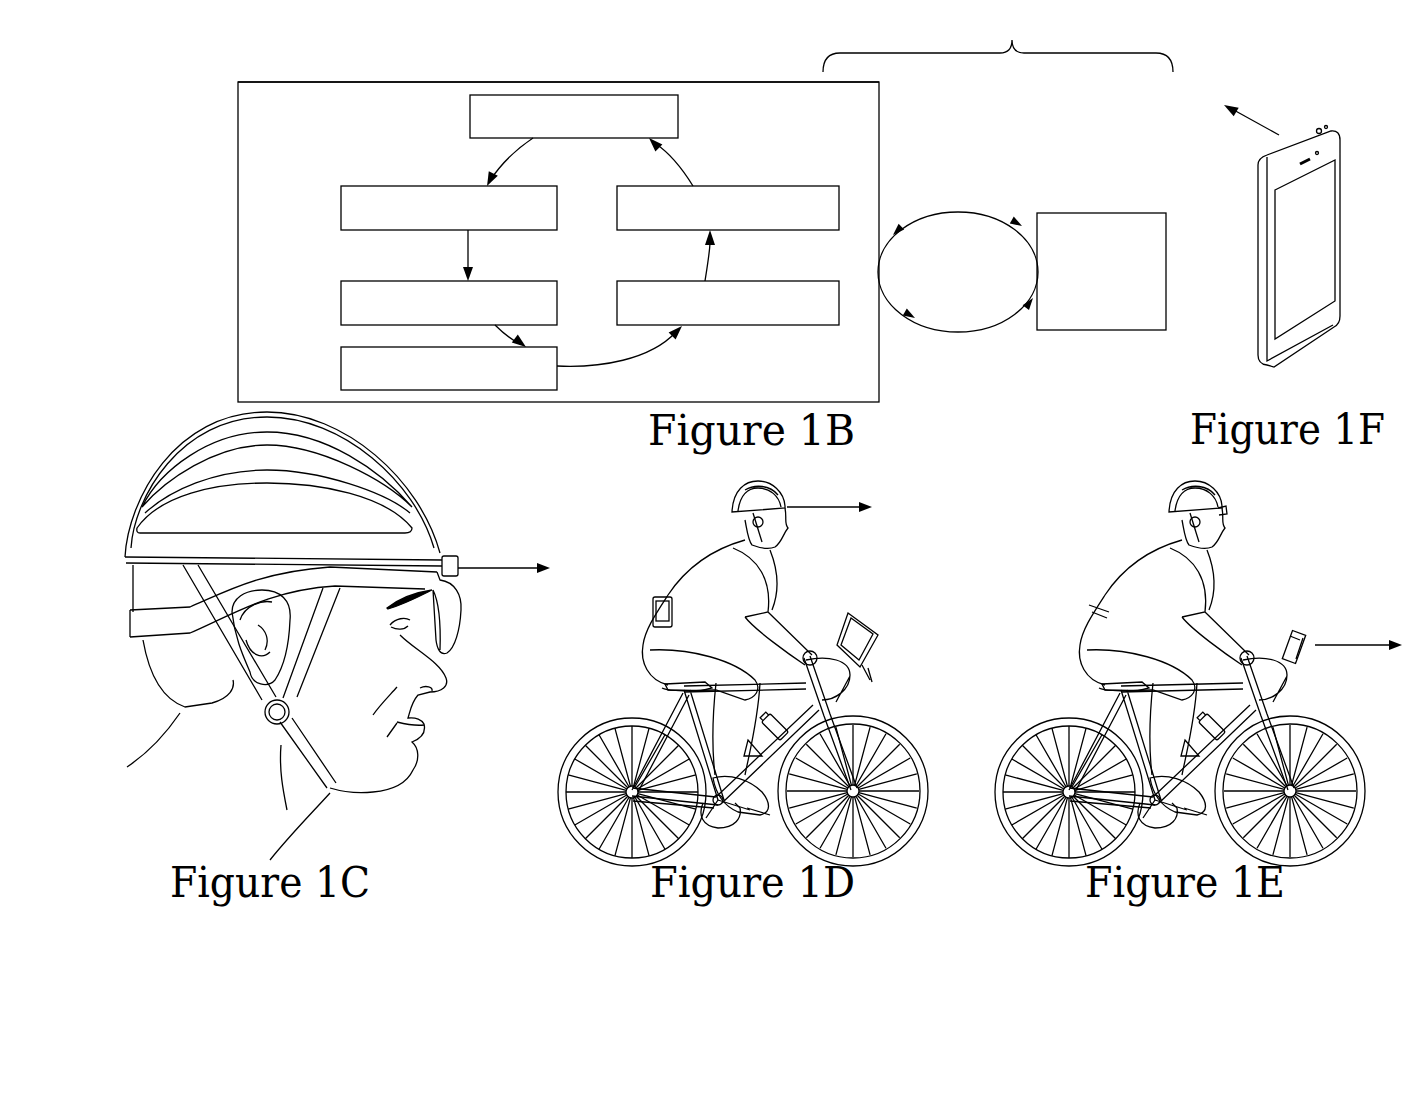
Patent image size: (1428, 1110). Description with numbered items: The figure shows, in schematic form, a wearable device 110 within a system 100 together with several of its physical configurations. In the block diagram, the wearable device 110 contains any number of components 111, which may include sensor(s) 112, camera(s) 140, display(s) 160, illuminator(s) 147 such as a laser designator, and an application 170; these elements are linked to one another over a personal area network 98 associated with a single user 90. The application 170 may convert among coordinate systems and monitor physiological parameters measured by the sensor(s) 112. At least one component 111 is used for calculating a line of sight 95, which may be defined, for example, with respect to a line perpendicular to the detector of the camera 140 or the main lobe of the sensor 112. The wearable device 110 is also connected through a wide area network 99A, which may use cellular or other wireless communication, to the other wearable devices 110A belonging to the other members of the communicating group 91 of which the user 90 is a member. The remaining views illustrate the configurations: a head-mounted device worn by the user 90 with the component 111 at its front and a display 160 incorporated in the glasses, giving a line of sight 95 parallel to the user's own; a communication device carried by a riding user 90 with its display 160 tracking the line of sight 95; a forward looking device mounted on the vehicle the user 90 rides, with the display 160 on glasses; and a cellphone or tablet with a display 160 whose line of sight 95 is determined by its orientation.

In FIG. 1B, the system 100 is at (153, 49).
In FIG. 1B, the wearable device 110 is at (308, 82).
In FIG. 1F, the wearable device 110 is at (1294, 53).
In FIG. 1C, the wearable device 110 is at (148, 640).
In FIG. 1D, the wearable device 110 is at (660, 597).
In FIG. 1E, the wearable device 110 is at (1290, 632).
In FIG. 1B, the wearable devices 110A is at (1122, 213).
In FIG. 1B, the component 111 is at (470, 115).
In FIG. 1C, the component 111 is at (452, 556).
In FIG. 1B, the sensor 112 is at (410, 186).
In FIG. 1B, the personal area network 98 is at (468, 243).
In FIG. 1B, the camera 140 is at (341, 298).
In FIG. 1B, the illuminator 147 is at (341, 366).
In FIG. 1B, the display 160 is at (810, 281).
In FIG. 1F, the display 160 is at (1320, 242).
In FIG. 1C, the display 160 is at (460, 645).
In FIG. 1D, the display 160 is at (857, 613).
In FIG. 1E, the display 160 is at (1220, 513).
In FIG. 1B, the application 170 is at (807, 186).
In FIG. 1B, the communicating group 91 is at (998, 41).
In FIG. 1B, the wide area network 99A is at (980, 332).
In FIG. 1C, the user 90 is at (212, 422).
In FIG. 1D, the user 90 is at (723, 548).
In FIG. 1E, the user 90 is at (1125, 560).
In FIG. 1F, the line of sight 95 is at (1260, 126).
In FIG. 1C, the line of sight 95 is at (493, 575).
In FIG. 1D, the line of sight 95 is at (828, 515).
In FIG. 1E, the line of sight 95 is at (1358, 634).